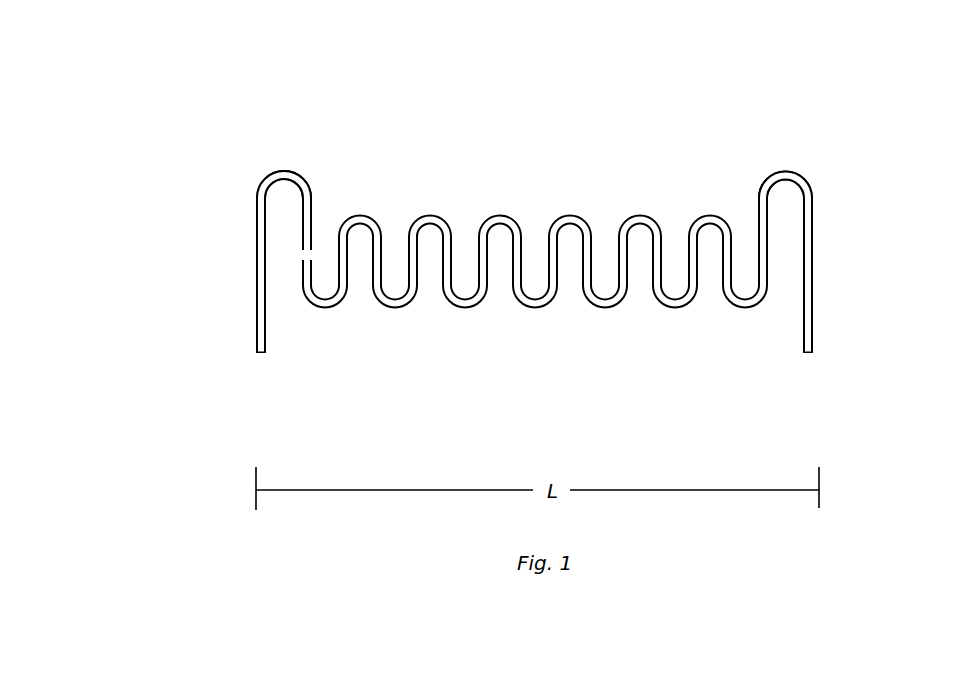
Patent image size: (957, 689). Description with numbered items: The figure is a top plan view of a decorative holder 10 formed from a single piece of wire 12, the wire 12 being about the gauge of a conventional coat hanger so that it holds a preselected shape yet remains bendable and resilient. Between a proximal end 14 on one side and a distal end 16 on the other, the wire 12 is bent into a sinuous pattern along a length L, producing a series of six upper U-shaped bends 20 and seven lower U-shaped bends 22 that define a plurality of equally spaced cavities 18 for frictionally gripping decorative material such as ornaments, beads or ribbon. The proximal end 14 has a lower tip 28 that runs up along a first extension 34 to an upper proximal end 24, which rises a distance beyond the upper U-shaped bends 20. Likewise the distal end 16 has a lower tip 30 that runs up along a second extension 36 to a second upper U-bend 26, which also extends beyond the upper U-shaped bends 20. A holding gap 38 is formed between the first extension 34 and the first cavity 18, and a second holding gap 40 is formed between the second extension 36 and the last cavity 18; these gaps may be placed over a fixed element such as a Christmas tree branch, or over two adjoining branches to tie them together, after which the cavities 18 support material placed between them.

The decorative holder 10 is at (541, 234).
The wire 12 is at (262, 354).
The proximal end 14 is at (256, 199).
The distal end 16 is at (812, 268).
The cavities 18 is at (397, 272).
The upper U-shaped bends 20 is at (708, 214).
The lower U-shaped bends 22 is at (747, 308).
The upper proximal end 24 is at (299, 184).
The second upper U-bend 26 is at (787, 172).
The lower tip 28 is at (259, 353).
The lower tip 30 is at (808, 355).
The first extension 34 is at (257, 260).
The second extension 36 is at (812, 320).
The holding gap 38 is at (282, 187).
The second holding gap 40 is at (788, 200).